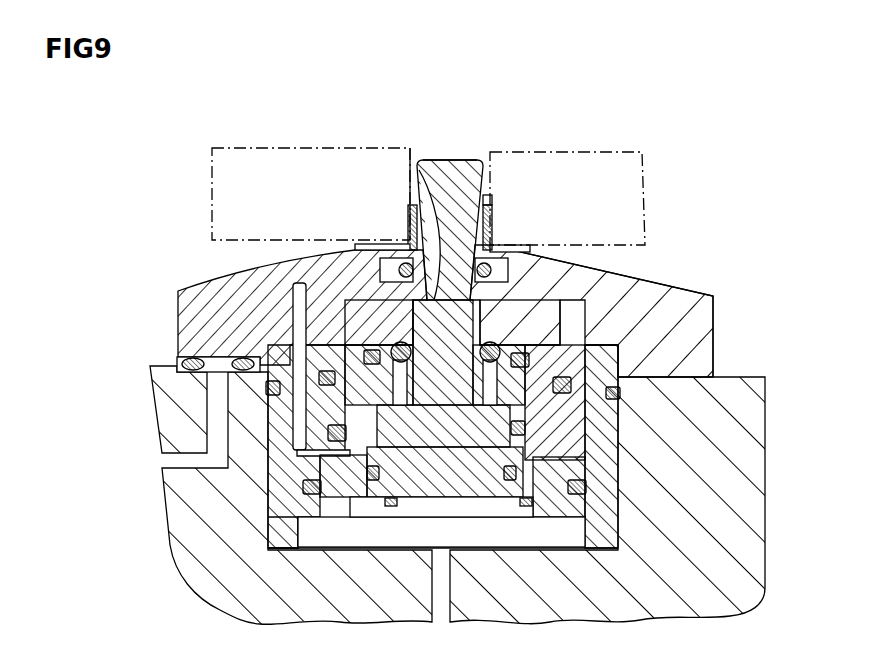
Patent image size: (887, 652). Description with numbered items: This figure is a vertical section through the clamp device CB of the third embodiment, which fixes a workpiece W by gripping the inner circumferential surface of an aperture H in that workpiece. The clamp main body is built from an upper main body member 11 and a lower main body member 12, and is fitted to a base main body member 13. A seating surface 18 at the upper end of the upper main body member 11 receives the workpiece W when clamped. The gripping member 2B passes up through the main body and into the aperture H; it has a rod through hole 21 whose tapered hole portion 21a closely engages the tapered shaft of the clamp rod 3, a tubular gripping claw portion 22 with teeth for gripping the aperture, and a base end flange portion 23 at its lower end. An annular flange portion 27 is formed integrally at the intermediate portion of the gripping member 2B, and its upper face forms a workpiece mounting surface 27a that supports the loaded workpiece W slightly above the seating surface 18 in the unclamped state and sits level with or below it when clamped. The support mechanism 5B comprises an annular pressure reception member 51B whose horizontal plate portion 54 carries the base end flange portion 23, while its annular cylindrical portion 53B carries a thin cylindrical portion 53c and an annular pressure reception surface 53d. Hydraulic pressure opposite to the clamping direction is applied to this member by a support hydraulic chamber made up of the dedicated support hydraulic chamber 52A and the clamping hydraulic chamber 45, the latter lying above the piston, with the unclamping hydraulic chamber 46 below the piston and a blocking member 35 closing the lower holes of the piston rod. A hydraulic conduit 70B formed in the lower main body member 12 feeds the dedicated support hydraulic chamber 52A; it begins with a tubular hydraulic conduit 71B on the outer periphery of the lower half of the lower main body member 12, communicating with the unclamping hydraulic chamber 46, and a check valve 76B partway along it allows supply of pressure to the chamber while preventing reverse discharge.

The base main body member 13 is at (178, 507).
The upper main body member 11 is at (208, 285).
The clamp device CB is at (613, 300).
The support mechanism 5B is at (582, 300).
The annular pressure reception member 51B is at (548, 299).
The seating surface 18 is at (532, 245).
The check valve 76B is at (588, 386).
The hydraulic conduit 70B is at (592, 402).
The lower main body member 12 is at (280, 488).
The annular cylindrical portion 53B is at (347, 392).
The clamping hydraulic chamber 45 is at (285, 505).
The tubular hydraulic conduit 71B is at (618, 494).
The unclamping hydraulic chamber 46 is at (482, 530).
The blocking member 35 is at (460, 483).
The dedicated support hydraulic chamber 52A is at (548, 407).
The thin cylindrical portion 53c is at (548, 420).
The annular pressure reception surface 53d is at (545, 408).
The rod through hole 21 is at (446, 257).
The tapered hole portion 21a is at (433, 176).
The clamp rod 3 is at (472, 157).
The workpiece mounting surface 27a is at (407, 243).
The tubular gripping claw portion 22 is at (484, 218).
The gripping member 2B is at (485, 198).
The annular flange portion 27 is at (401, 262).
The base end flange portion 23 is at (385, 297).
The horizontal plate portion 54 is at (360, 290).
The workpiece W is at (212, 190).
The aperture H is at (410, 165).